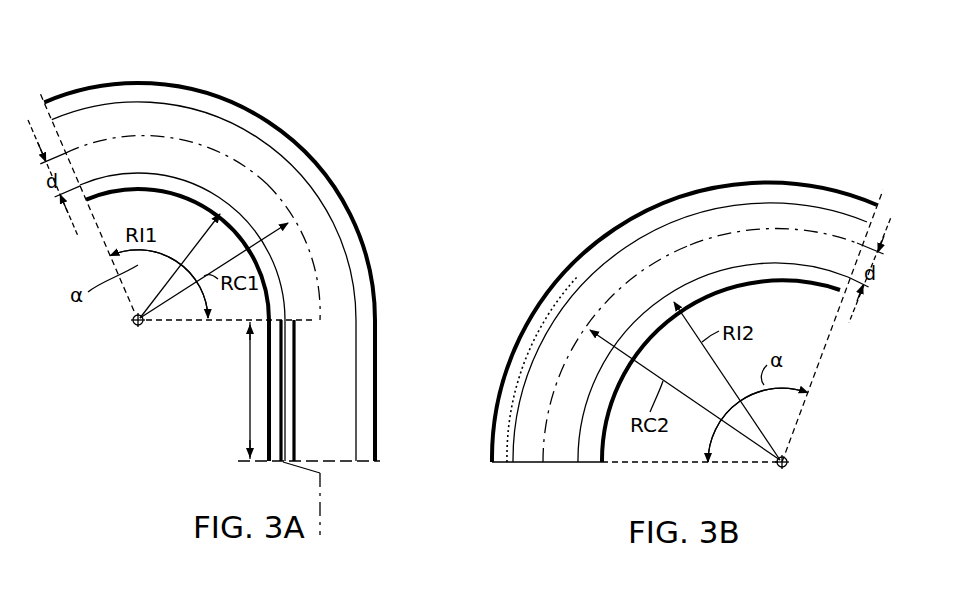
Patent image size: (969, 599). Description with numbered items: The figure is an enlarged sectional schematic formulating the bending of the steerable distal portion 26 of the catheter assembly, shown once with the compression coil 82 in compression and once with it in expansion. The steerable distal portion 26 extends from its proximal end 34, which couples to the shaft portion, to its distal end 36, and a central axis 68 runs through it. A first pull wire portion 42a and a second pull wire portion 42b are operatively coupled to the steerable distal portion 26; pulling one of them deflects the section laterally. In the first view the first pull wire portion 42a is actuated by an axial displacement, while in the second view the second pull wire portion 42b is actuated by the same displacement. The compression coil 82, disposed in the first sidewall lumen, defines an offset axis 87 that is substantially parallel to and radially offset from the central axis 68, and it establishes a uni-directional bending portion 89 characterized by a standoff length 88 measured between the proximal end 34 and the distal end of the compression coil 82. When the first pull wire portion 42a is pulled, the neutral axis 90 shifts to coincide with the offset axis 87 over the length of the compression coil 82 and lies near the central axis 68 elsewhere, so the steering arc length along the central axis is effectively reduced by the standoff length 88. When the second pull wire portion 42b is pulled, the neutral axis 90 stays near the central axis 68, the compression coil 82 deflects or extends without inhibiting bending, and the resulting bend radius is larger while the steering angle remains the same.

In FIG. 3A, the steerable distal portion 26 is at (173, 83).
In FIG. 3B, the steerable distal portion 26 is at (546, 298).
In FIG. 3A, the proximal end 34 is at (350, 462).
In FIG. 3B, the proximal end 34 is at (532, 463).
In FIG. 3A, the distal end 36 is at (72, 100).
In FIG. 3B, the distal end 36 is at (845, 200).
In FIG. 3A, the first pull wire portion 42a is at (280, 262).
In FIG. 3B, the first pull wire portion 42a is at (757, 202).
In FIG. 3A, the second pull wire portion 42b is at (300, 174).
In FIG. 3B, the second pull wire portion 42b is at (682, 287).
In FIG. 3A, the central axis 68 is at (203, 147).
In FIG. 3B, the central axis 68 is at (725, 238).
In FIG. 3A, the compression coil 82 is at (285, 360).
In FIG. 3B, the compression coil 82 is at (510, 358).
In FIG. 3A, the offset axis 87 is at (285, 360).
In FIG. 3A, the standoff length 88 is at (248, 378).
In FIG. 3A, the uni-directional bending portion 89 is at (226, 390).
In FIG. 3A, the neutral axis 90 is at (235, 160).
In FIG. 3B, the neutral axis 90 is at (680, 250).